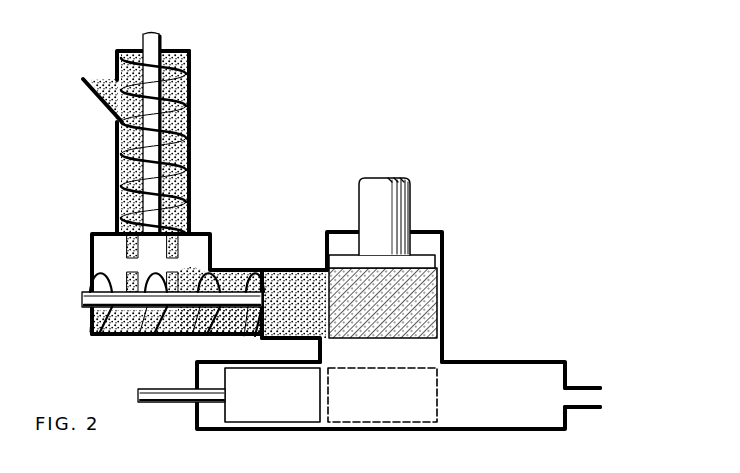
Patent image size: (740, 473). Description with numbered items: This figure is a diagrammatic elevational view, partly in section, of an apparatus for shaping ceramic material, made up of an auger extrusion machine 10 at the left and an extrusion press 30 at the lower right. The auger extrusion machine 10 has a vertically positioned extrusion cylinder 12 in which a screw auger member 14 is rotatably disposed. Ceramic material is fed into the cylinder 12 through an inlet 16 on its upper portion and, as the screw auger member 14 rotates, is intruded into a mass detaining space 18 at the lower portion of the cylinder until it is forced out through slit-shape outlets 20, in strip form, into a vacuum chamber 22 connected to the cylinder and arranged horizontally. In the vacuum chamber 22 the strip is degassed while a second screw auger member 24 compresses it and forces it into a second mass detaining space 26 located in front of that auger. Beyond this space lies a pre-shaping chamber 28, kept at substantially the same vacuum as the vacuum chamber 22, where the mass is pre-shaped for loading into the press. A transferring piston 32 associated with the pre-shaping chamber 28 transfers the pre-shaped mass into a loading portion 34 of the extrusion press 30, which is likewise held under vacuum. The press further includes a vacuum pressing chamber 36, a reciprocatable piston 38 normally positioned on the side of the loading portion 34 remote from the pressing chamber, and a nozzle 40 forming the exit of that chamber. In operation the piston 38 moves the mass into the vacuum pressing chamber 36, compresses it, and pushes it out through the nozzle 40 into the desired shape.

The auger extrusion machine 10 is at (226, 154).
The extrusion cylinder 12 is at (190, 104).
The screw auger member 14 is at (118, 150).
The inlet 16 is at (96, 104).
The mass detaining space 18 is at (190, 221).
The slit-shape outlets 20 is at (180, 250).
The vacuum chamber 22 is at (108, 252).
The second screw auger member 24 is at (152, 322).
The second mass detaining space 26 is at (291, 270).
The pre-shaping chamber 28 is at (443, 308).
The extrusion press 30 is at (499, 344).
The transferring piston 32 is at (350, 258).
The loading portion 34 is at (382, 395).
The vacuum pressing chamber 36 is at (503, 395).
The reciprocatable piston 38 is at (272, 395).
The nozzle 40 is at (580, 398).